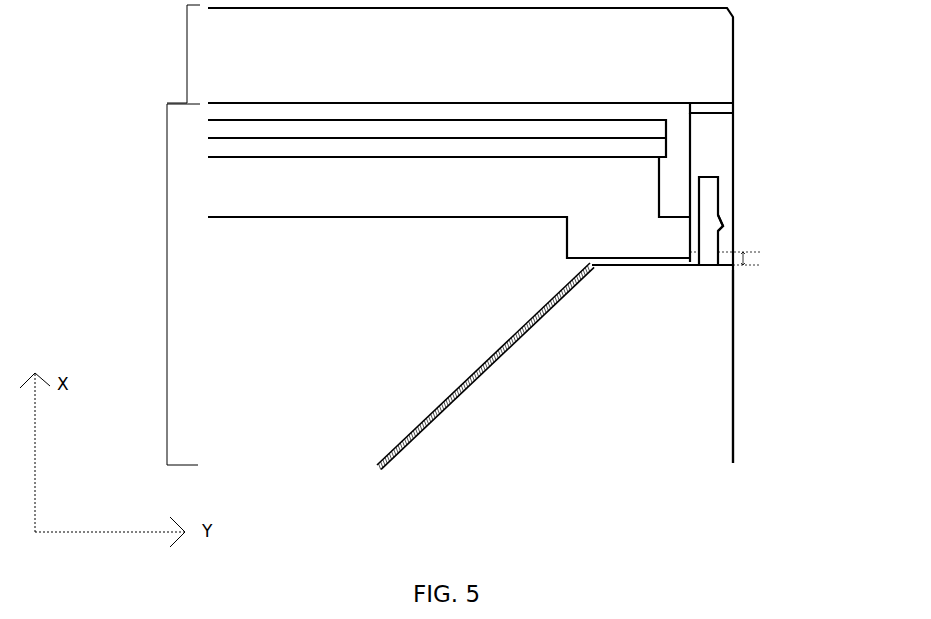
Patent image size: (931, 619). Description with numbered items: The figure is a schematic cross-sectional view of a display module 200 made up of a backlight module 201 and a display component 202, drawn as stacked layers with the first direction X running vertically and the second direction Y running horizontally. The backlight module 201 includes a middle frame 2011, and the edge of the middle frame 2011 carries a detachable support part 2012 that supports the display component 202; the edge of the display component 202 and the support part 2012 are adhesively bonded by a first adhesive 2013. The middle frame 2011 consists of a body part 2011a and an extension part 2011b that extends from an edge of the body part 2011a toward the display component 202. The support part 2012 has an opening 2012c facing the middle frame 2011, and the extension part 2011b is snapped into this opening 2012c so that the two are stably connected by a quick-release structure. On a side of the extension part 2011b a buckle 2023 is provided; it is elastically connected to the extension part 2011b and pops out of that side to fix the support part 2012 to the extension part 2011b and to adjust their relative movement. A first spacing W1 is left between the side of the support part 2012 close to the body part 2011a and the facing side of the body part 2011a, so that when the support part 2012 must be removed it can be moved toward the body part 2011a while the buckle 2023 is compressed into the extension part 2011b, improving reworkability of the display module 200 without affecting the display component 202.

The display module 200 is at (481, 526).
The backlight module 201 is at (158, 284).
The display component 202 is at (168, 54).
The middle frame 2011 is at (688, 357).
The body part 2011a is at (685, 317).
The extension part 2011b is at (708, 190).
The support part 2012 is at (719, 154).
The opening 2012c is at (718, 207).
The first adhesive 2013 is at (723, 110).
The buckle 2023 is at (723, 227).
The first spacing W1 is at (743, 262).